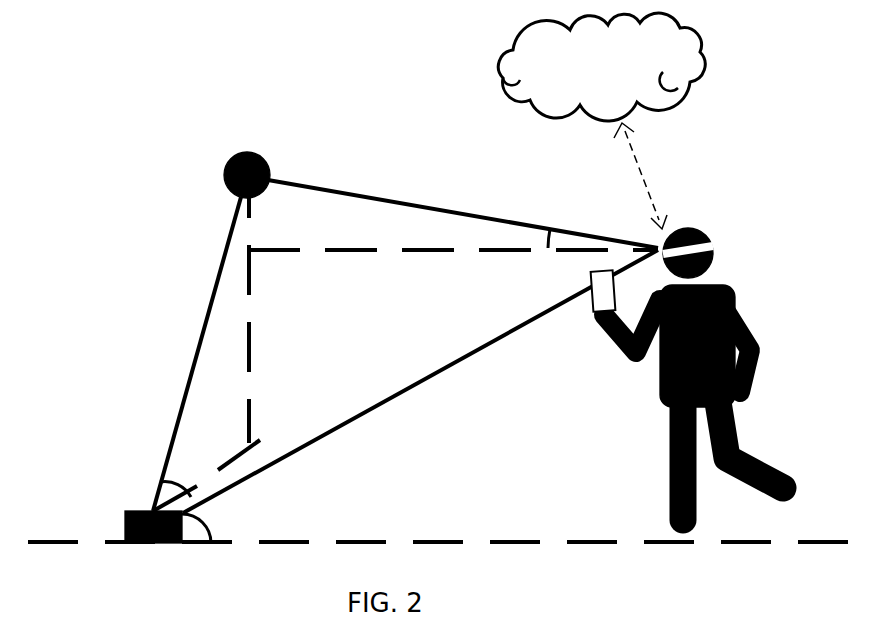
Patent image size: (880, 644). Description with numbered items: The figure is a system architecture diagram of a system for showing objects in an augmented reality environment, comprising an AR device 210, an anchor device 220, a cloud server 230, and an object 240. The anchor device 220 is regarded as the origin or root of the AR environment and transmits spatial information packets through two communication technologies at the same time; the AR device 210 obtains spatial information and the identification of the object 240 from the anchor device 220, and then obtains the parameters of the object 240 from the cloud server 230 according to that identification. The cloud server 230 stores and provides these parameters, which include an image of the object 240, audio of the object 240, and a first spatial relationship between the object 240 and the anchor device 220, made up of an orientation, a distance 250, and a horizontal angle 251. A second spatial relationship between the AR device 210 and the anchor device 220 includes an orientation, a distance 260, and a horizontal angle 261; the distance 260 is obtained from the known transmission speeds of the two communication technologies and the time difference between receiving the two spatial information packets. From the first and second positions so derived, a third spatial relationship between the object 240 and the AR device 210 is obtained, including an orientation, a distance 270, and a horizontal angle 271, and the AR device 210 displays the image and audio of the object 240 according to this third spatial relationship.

The AR device 210 is at (695, 232).
The anchor device 220 is at (122, 513).
The cloud server 230 is at (635, 67).
The object 240 is at (230, 152).
The distance 250 is at (191, 354).
The horizontal angle 251 is at (178, 490).
The distance 260 is at (420, 381).
The horizontal angle 261 is at (210, 527).
The distance 270 is at (463, 208).
The horizontal angle 271 is at (552, 236).